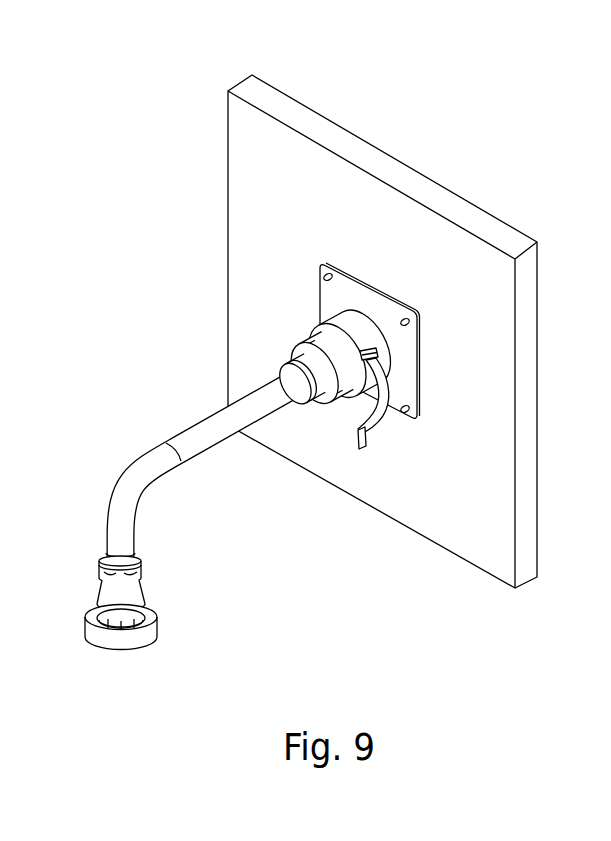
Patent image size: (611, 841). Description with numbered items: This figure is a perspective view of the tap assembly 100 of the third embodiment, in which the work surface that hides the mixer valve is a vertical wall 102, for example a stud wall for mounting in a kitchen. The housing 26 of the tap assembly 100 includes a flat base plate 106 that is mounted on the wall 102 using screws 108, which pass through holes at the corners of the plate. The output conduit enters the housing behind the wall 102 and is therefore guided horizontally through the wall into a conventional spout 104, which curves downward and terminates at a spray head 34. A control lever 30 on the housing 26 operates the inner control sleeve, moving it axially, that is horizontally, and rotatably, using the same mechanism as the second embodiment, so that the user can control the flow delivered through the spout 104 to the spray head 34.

The tap assembly 100 is at (311, 362).
The vertical wall 102 is at (382, 331).
The spout 104 is at (211, 471).
The flat base plate 106 is at (383, 329).
The screws 108 is at (330, 273).
The housing 26 is at (351, 316).
The control lever 30 is at (390, 409).
The spray head 34 is at (142, 601).